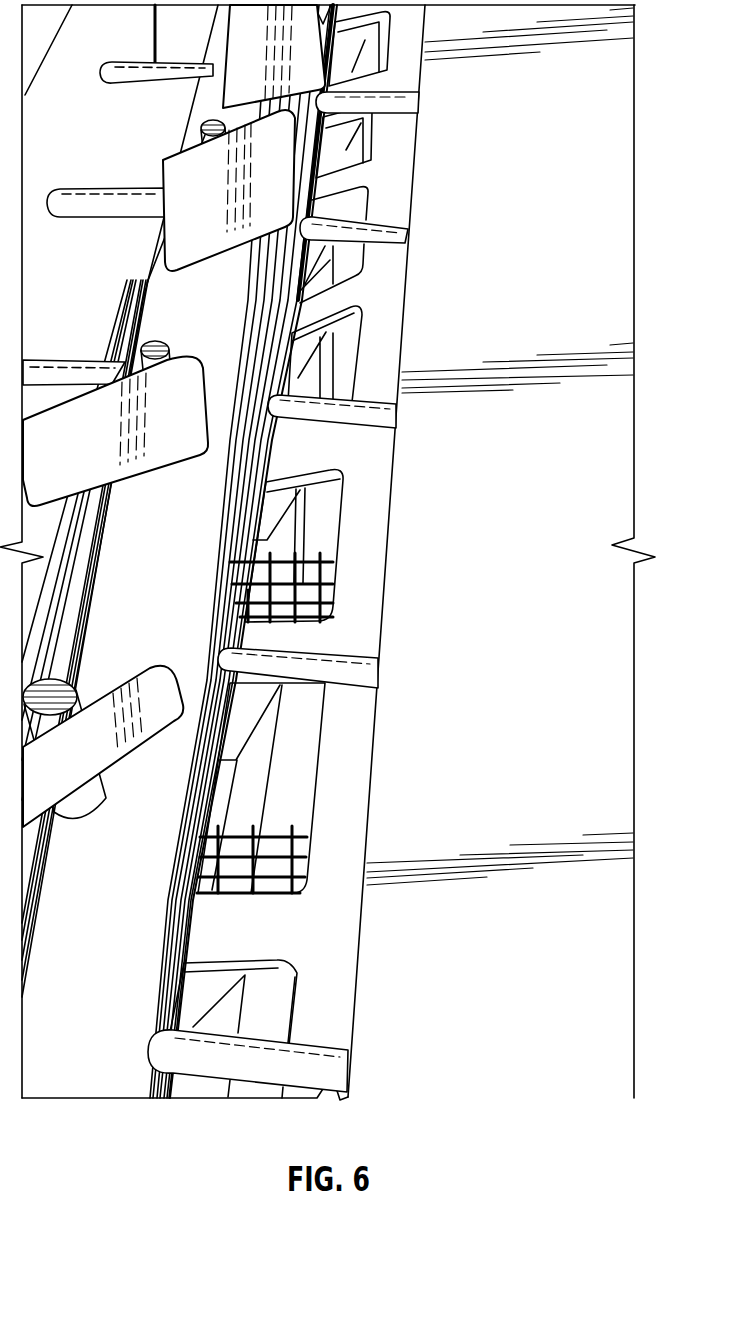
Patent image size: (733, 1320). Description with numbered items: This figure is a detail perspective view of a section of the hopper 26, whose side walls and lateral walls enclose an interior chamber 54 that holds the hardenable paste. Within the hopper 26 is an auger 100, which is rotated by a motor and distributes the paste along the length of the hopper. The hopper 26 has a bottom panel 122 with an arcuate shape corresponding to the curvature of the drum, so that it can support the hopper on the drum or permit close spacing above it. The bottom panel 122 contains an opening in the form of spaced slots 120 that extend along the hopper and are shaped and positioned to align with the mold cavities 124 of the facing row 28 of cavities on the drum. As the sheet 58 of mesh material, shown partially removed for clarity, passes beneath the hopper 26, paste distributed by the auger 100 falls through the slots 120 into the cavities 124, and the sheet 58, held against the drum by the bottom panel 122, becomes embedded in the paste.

The hopper 26 is at (595, 424).
The facing row of mold cavities 28 is at (305, 760).
The interior chamber 54 is at (612, 297).
The sheet of mesh material 58 is at (335, 558).
The auger 100 is at (330, 612).
The slots 120 is at (300, 800).
The bottom panel 122 is at (357, 852).
The mold cavities 124 is at (370, 143).